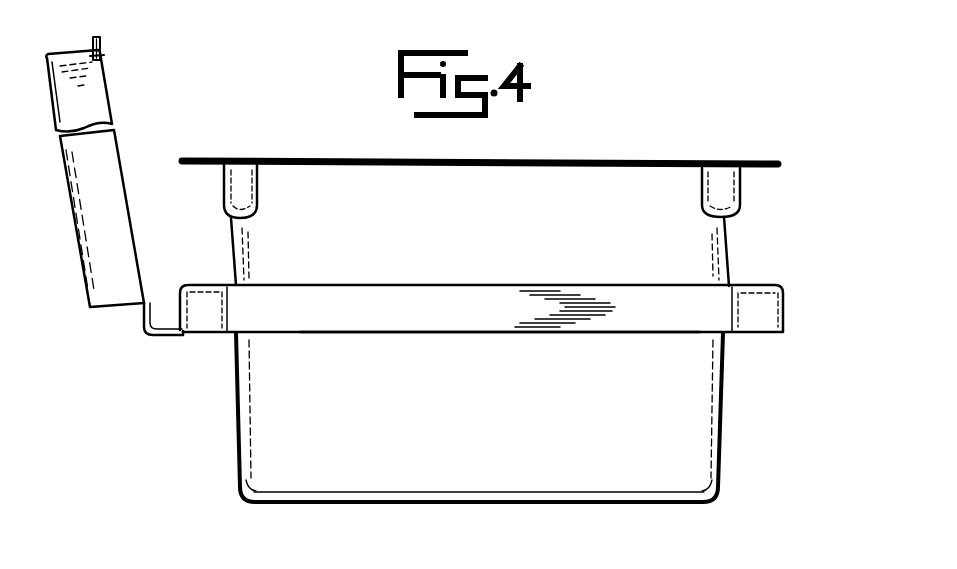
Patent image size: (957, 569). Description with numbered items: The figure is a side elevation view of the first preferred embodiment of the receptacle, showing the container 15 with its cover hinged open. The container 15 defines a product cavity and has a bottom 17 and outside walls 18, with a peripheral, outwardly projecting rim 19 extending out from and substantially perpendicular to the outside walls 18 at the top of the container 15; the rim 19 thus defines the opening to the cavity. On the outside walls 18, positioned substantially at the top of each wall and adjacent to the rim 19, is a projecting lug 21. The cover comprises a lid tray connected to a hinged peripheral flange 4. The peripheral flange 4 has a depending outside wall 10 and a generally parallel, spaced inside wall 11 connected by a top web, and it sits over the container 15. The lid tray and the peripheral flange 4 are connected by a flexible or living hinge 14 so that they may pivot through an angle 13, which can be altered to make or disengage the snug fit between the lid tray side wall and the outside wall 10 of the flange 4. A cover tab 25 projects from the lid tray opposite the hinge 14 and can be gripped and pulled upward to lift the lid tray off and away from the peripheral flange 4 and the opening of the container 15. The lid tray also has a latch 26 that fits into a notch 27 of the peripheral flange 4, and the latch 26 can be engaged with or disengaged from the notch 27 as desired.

The peripheral flange 4 is at (348, 313).
The outside wall 10 is at (468, 318).
The inside wall 11 is at (735, 282).
The angle 13 is at (137, 243).
The hinge 14 is at (144, 340).
The container 15 is at (693, 412).
The bottom 17 is at (617, 503).
The outside walls 18 is at (548, 432).
The rim 19 is at (182, 160).
The lug 21 is at (232, 193).
The cover tab 25 is at (100, 40).
The latch 26 is at (103, 60).
The notch 27 is at (787, 325).